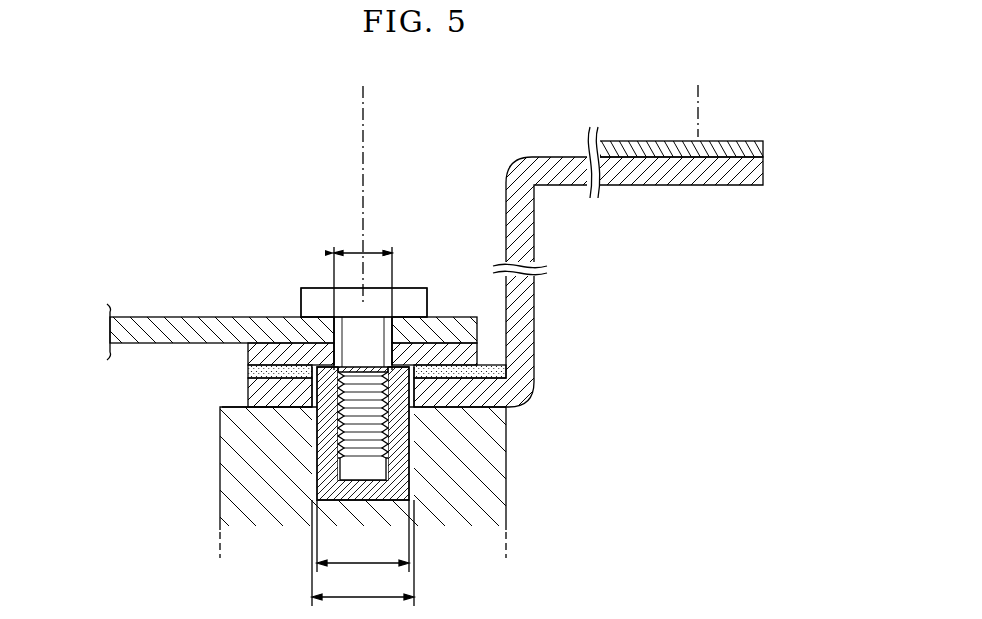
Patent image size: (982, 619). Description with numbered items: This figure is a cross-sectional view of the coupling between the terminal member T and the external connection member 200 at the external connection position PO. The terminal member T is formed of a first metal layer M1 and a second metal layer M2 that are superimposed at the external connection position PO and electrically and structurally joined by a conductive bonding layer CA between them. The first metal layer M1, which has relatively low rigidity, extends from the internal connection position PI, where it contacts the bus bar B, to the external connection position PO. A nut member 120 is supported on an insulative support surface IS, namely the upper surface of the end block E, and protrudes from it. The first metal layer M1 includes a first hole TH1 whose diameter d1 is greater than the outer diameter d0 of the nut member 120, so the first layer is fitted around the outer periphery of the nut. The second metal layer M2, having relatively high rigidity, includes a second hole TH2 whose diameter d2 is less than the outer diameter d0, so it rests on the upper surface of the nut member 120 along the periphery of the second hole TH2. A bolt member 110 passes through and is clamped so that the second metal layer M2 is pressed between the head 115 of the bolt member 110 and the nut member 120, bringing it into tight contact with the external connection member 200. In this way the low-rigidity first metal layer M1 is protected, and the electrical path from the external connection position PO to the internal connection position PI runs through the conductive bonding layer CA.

The bolt member 110 is at (316, 276).
The head 115 is at (415, 293).
The nut member 120 is at (328, 483).
The external connection member 200 is at (142, 317).
The first hole TH1 is at (322, 423).
The second hole TH2 is at (340, 352).
The insulative support surface IS is at (228, 405).
The end block E is at (228, 484).
The bus bar B is at (645, 146).
The internal connection position PI is at (697, 98).
The external connection position PO is at (363, 180).
The first metal layer M1 is at (527, 310).
The second metal layer M2 is at (478, 356).
The conductive bonding layer CA is at (507, 372).
The terminal member T is at (606, 298).
The outer diameter d0 is at (363, 536).
The diameter of the first hole d1 is at (363, 553).
The diameter of the second hole d2 is at (363, 273).